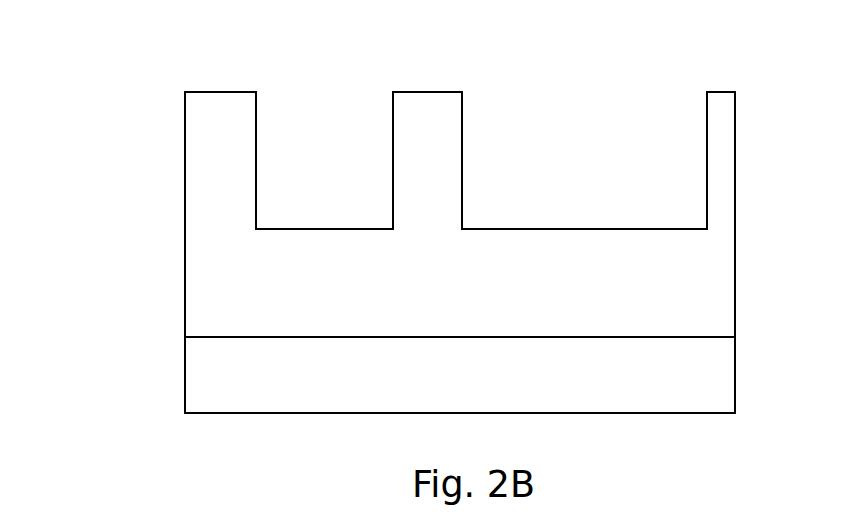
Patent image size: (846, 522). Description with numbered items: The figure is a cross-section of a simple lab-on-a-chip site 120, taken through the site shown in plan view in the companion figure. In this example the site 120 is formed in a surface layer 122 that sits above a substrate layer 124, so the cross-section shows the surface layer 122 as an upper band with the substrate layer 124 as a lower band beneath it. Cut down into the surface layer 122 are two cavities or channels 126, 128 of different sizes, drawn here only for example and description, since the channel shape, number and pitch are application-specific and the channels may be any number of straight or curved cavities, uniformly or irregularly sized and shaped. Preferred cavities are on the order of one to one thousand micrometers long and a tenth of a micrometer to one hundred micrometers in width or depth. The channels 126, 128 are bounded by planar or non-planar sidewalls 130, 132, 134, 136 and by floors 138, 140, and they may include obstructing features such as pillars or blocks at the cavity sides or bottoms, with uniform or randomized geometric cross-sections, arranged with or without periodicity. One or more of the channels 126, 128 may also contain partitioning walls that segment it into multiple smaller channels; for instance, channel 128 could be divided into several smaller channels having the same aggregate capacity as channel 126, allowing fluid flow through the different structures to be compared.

The lab-on-a-chip site 120 is at (753, 392).
The surface layer 122 is at (96, 222).
The substrate layer 124 is at (97, 374).
The channel 126 is at (332, 156).
The channel 128 is at (597, 156).
The sidewall 130 is at (257, 120).
The sidewall 132 is at (394, 102).
The sidewall 134 is at (463, 107).
The sidewall 136 is at (705, 108).
The floor 138 is at (315, 229).
The floor 140 is at (582, 230).